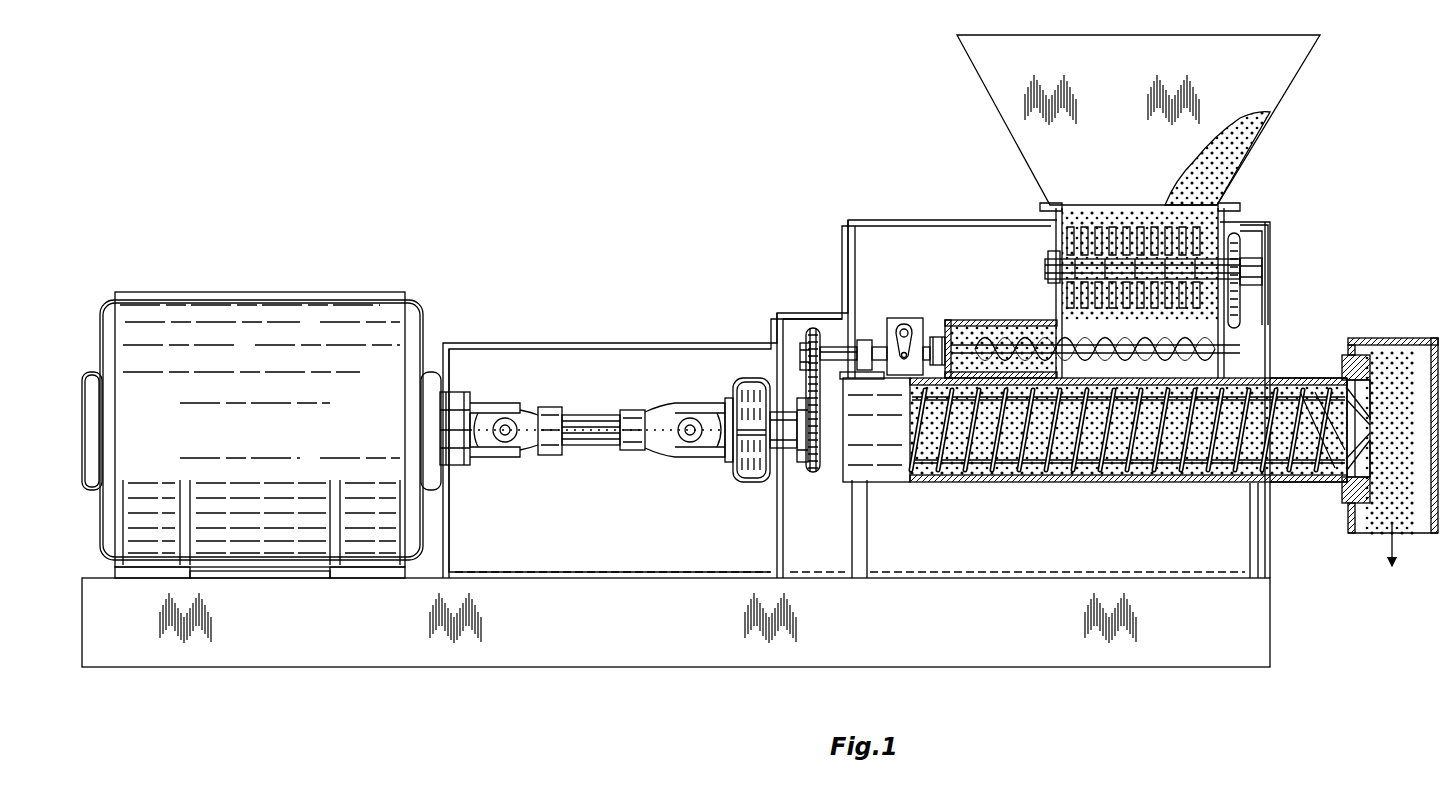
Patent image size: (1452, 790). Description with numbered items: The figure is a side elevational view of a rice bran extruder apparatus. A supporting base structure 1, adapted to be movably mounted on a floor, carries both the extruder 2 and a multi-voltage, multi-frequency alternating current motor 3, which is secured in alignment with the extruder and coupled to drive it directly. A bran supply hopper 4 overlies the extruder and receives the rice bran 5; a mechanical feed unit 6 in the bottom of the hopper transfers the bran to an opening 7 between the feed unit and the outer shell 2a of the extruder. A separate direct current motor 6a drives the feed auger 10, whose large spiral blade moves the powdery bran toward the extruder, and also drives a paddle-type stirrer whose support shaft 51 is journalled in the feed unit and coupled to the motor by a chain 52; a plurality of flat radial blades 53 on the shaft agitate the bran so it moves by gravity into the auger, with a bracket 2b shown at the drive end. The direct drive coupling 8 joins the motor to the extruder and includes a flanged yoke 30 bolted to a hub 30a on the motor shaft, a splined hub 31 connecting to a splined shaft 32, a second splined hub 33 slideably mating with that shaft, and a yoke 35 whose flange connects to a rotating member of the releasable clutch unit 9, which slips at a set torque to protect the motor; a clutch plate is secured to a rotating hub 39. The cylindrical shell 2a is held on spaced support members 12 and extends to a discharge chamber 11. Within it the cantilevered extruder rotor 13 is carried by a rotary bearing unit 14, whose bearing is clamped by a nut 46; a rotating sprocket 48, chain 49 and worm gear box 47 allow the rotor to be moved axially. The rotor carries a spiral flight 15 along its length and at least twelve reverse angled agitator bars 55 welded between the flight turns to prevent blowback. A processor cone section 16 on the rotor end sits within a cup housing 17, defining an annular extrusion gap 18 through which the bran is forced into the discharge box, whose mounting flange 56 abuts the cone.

The supporting base structure 1 is at (246, 672).
The extruder 2 is at (1000, 484).
The outer shell 2a is at (1290, 378).
The bearing bracket 2b is at (1262, 272).
The A.C. motor 3 is at (318, 292).
The bran supply hopper 4 is at (1272, 92).
The rice bran 5 is at (1258, 150).
The mechanical feed unit 6 is at (1052, 233).
The D.C. motor 6a is at (1262, 240).
The opening 7 is at (940, 372).
The direct drive coupling 8 is at (594, 446).
The releasable clutch unit 9 is at (735, 380).
The feed auger 10 is at (1012, 332).
The discharge chamber 11 is at (1405, 338).
The support members 12 is at (866, 514).
The extruder rotor 13 is at (1072, 462).
The rotary bearing unit 14 is at (840, 472).
The spiral flight 15 is at (1192, 470).
The processor cone section 16 is at (1372, 442).
The cup housing 17 is at (1368, 382).
The annular extrusion gap 18 is at (1372, 470).
The flanged yoke 30 is at (490, 458).
The hub 30a is at (470, 392).
The splined hub 31 is at (550, 407).
The splined shaft 32 is at (590, 415).
The splined hub 33 is at (632, 452).
The yoke 35 is at (690, 458).
The rotating hub 39 is at (730, 464).
The nut 46 is at (805, 470).
The worm gear box 47 is at (905, 318).
The rotating sprocket 48 is at (800, 352).
The chain 49 is at (813, 328).
The support shaft 51 is at (1045, 275).
The chain 52 is at (1242, 250).
The paddles or blades 53 is at (1160, 228).
The agitator bars 55 is at (1312, 483).
The mounting flange 56 is at (1350, 355).